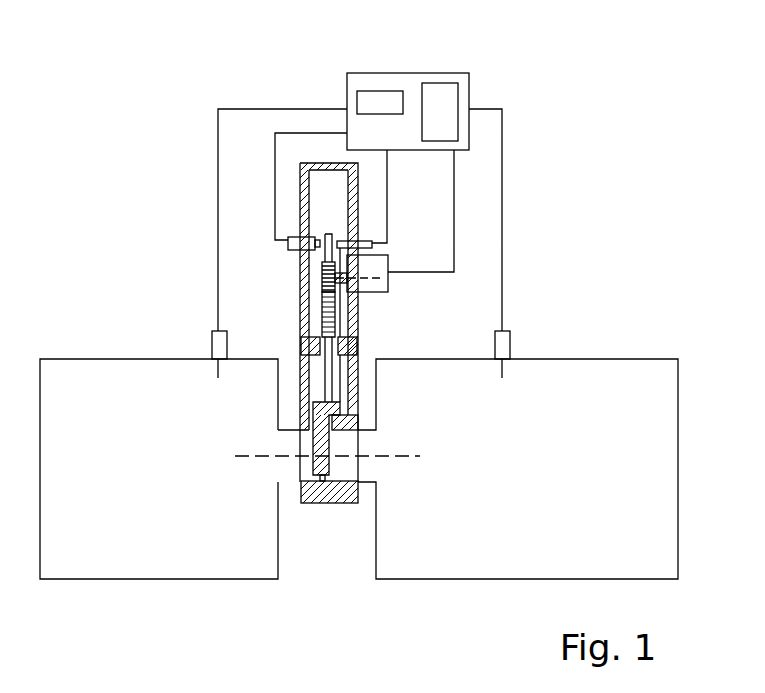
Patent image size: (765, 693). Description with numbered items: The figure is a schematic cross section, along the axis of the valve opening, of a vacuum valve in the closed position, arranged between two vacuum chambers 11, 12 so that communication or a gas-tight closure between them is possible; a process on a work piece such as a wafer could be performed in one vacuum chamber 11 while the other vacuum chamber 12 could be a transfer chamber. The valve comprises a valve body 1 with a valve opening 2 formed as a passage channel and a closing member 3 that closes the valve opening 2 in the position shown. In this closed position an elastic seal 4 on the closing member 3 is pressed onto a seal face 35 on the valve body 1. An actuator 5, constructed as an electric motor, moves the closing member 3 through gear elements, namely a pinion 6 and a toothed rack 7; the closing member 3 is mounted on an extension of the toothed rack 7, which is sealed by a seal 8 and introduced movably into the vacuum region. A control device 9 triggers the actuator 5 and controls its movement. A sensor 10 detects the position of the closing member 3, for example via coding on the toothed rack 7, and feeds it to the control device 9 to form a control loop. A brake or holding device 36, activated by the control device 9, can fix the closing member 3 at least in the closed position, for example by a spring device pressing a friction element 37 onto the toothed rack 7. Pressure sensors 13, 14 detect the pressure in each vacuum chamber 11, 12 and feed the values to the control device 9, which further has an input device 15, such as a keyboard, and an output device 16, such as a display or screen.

The valve body 1 is at (312, 497).
The valve opening 2 is at (349, 484).
The closing member 3 is at (354, 473).
The elastic seal 4 is at (363, 420).
The actuator 5 is at (397, 268).
The pinion 6 is at (303, 268).
The toothed rack 7 is at (320, 310).
The seal 8 is at (360, 335).
The control device 9 is at (505, 75).
The sensor 10 is at (345, 241).
The vacuum chamber 11 is at (152, 378).
The vacuum chamber 12 is at (600, 368).
The pressure sensor 13 is at (217, 370).
The pressure sensor 14 is at (505, 373).
The input device 15 is at (440, 99).
The output device 16 is at (385, 100).
The seal face 35 is at (334, 500).
The holding device 36 is at (288, 239).
The friction element 37 is at (300, 229).